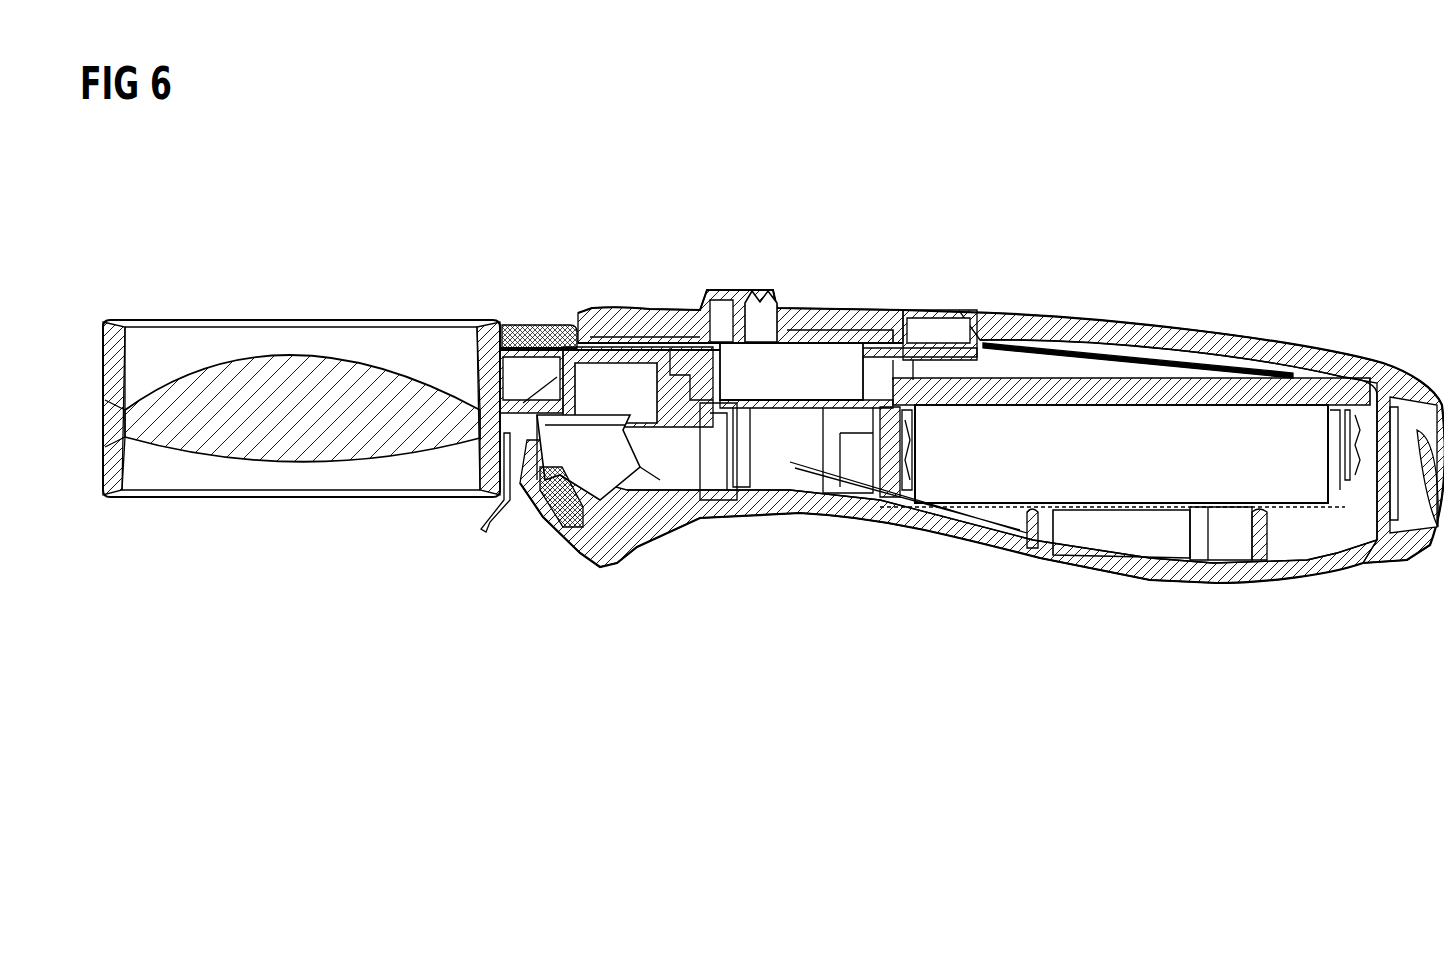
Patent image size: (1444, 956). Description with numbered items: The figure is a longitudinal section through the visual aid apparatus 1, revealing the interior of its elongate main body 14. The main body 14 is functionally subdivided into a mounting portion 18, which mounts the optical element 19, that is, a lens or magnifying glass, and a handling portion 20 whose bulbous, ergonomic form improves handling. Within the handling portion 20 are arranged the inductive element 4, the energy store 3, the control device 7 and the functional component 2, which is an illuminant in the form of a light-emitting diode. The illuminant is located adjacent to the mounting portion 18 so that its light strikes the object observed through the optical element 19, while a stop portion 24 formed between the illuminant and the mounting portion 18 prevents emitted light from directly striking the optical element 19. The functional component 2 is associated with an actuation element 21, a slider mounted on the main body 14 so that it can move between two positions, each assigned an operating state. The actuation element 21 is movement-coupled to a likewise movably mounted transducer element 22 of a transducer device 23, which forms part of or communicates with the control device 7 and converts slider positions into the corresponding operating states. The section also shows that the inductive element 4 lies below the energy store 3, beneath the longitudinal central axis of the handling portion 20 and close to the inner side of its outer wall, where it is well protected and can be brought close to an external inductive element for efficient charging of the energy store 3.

The visual aid apparatus 1 is at (1280, 272).
The functional component 2 is at (560, 507).
The energy store 3 is at (1280, 467).
The inductive element 4 is at (1123, 537).
The control device 7 is at (872, 396).
The main body 14 is at (993, 604).
The mounting portion 18 is at (219, 272).
The optical element 19 is at (368, 380).
The handling portion 20 is at (1173, 604).
The actuation element 21 is at (658, 328).
The transducer element 22 is at (766, 316).
The transducer device 23 is at (838, 358).
The stop portion 24 is at (490, 517).